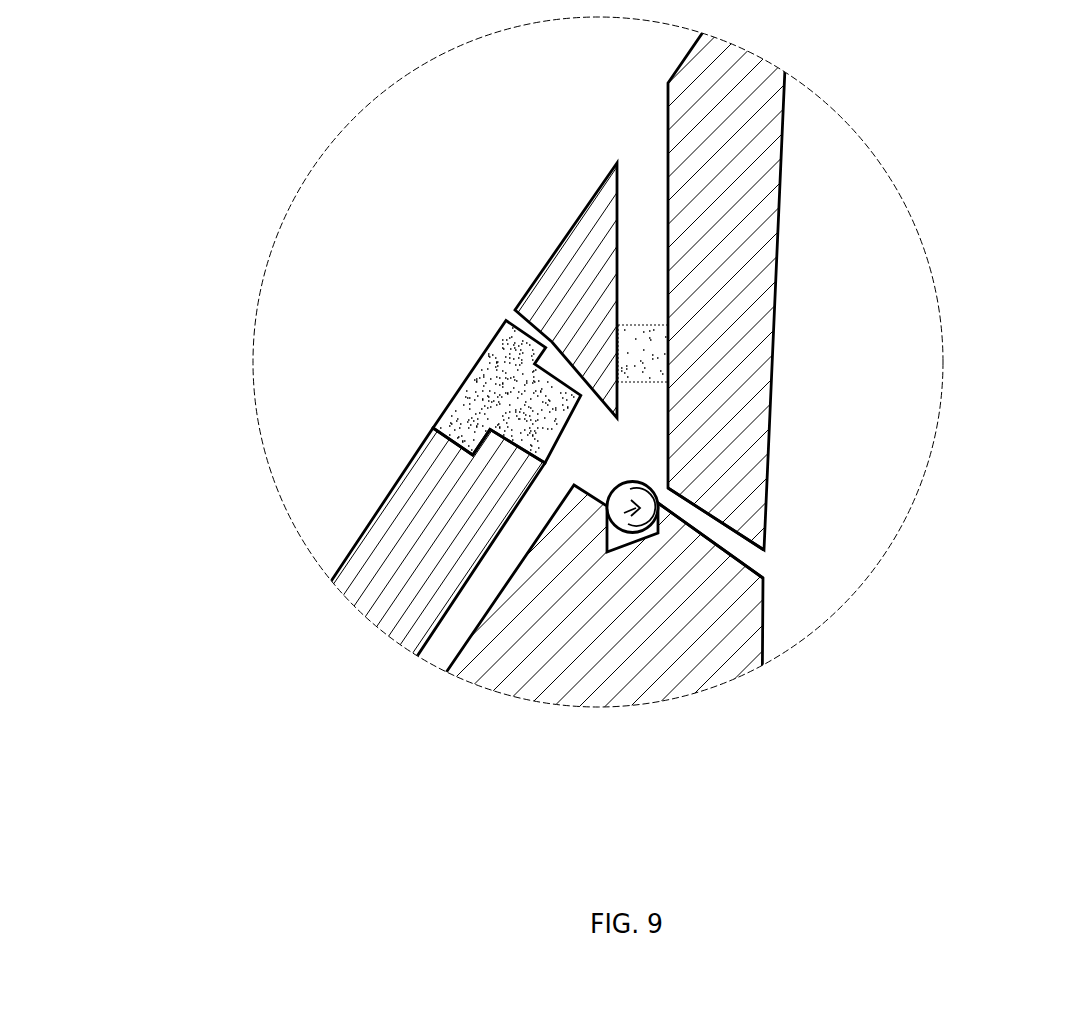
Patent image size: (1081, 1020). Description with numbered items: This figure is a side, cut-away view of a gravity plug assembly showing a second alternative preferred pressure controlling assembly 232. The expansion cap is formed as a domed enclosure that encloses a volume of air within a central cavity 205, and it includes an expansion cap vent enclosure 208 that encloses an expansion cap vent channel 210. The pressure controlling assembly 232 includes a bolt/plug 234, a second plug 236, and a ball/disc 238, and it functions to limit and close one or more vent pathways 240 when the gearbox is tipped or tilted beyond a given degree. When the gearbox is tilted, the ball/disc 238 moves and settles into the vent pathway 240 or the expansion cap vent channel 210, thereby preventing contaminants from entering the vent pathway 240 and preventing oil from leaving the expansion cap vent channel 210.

The central cavity 205 is at (866, 382).
The expansion cap vent enclosure 208 is at (447, 473).
The expansion cap vent channel 210 is at (473, 591).
The second alternative preferred pressure controlling assembly 232 is at (467, 160).
The bolt/plug 234 is at (493, 378).
The second plug 236 is at (652, 338).
The ball/disc 238 is at (657, 501).
The vent pathway 240 is at (767, 565).